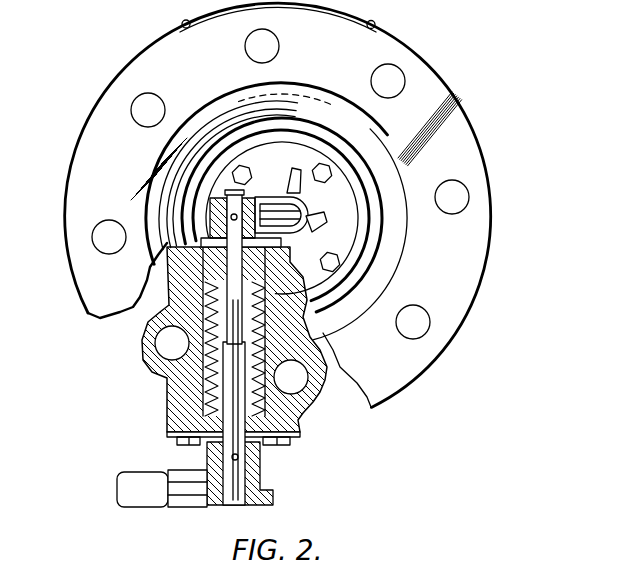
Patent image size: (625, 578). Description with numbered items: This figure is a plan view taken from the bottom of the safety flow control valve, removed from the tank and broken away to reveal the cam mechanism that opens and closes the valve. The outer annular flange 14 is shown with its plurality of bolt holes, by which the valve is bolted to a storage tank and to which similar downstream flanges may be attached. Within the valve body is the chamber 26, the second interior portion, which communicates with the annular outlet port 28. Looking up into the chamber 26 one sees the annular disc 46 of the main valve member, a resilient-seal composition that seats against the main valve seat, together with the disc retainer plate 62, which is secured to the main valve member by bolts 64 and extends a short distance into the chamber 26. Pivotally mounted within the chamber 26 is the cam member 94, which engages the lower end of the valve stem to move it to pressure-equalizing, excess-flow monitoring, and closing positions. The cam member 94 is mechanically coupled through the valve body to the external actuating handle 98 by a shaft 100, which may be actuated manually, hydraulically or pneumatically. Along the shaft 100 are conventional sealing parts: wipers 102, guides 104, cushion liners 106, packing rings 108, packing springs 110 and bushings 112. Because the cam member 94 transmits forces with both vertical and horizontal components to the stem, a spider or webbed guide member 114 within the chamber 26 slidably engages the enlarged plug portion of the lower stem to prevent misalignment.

The annular flange 14 is at (472, 130).
The chamber 26 is at (286, 164).
The annular outlet port 28 is at (392, 186).
The annular disc 46 is at (352, 160).
The disc retainer plate 62 is at (309, 156).
The bolts 64 is at (241, 168).
The cam member 94 is at (300, 212).
The actuating handle 98 is at (118, 488).
The shaft 100 is at (250, 447).
The wipers 102 is at (218, 420).
The guides 104 is at (300, 420).
The cushion liners 106 is at (212, 393).
The packing rings 108 is at (309, 330).
The packing springs 110 is at (195, 306).
The bushings 112 is at (205, 264).
The spider or webbed guide member 114 is at (327, 220).